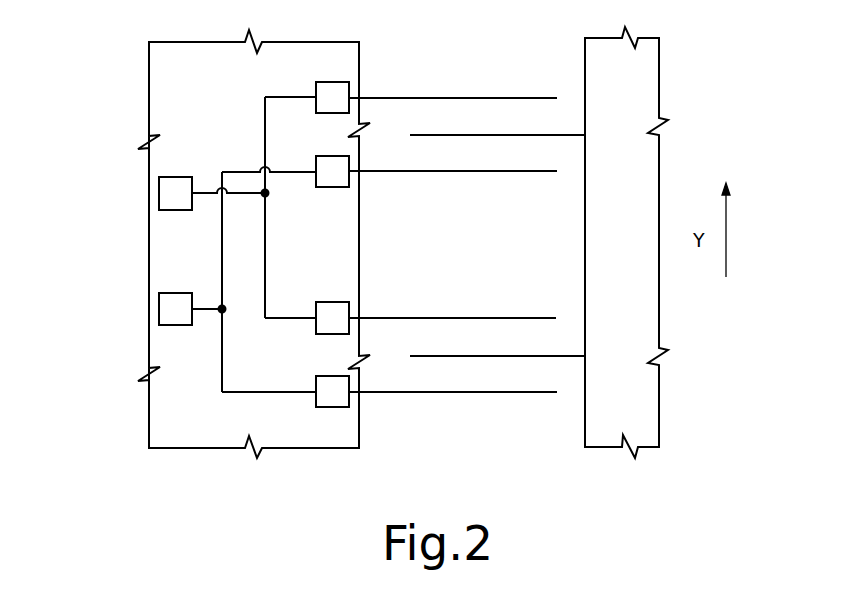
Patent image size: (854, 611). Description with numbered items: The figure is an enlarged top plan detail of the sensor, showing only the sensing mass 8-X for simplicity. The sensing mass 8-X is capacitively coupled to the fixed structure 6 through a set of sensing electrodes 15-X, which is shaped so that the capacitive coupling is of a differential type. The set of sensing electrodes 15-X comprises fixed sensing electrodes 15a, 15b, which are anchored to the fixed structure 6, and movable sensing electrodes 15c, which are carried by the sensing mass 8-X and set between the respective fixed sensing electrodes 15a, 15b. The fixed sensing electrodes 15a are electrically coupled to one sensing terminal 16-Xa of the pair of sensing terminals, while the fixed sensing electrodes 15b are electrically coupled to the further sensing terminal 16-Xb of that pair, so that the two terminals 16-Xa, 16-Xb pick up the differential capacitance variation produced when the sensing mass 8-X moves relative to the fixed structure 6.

The fixed structure 6 is at (218, 450).
The sensing terminal 16-Xa is at (173, 187).
The sensing terminal 16-Xb is at (168, 309).
The set of sensing electrodes 15-X is at (503, 83).
The fixed sensing electrode 15a is at (425, 98).
The fixed sensing electrode 15b is at (481, 172).
The movable sensing electrode 15c is at (563, 136).
The sensing mass 8-X is at (653, 83).